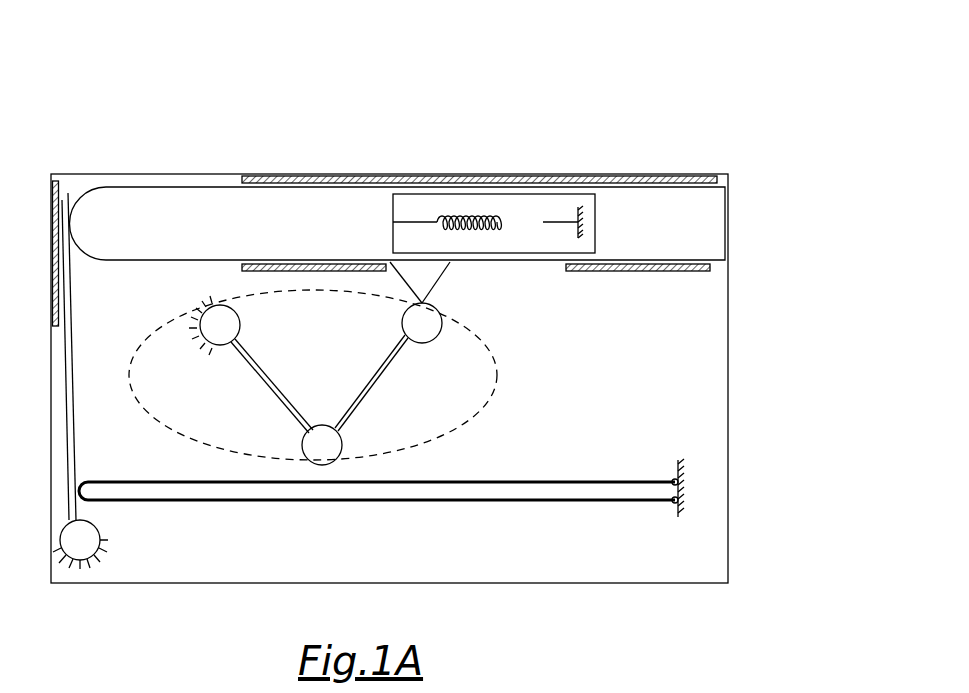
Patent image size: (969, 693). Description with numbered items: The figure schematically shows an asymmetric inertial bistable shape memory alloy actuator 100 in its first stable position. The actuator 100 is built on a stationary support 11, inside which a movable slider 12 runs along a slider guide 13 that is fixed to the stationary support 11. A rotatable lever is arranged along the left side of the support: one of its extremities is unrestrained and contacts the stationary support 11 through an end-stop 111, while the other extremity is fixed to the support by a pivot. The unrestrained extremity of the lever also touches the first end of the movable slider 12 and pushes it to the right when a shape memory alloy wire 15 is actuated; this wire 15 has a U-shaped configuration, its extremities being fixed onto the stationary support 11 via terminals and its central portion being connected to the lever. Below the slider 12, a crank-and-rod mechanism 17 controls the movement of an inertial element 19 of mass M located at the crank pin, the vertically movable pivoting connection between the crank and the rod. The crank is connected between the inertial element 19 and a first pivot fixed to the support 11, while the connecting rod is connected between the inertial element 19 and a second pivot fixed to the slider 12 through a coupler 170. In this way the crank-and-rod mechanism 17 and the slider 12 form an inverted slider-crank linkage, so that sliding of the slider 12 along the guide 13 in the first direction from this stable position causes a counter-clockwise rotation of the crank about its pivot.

The asymmetric bistable shape memory alloy actuator 100 is at (603, 150).
The stationary support 11 is at (649, 564).
The end-stop 111 is at (52, 204).
The movable slider 12 is at (193, 208).
The slider guide 13 is at (384, 177).
The coupler 170 is at (423, 275).
The crank-and-rod mechanism 17 is at (467, 428).
The inertial element 19 is at (323, 445).
The shape memory alloy wire 15 is at (460, 500).